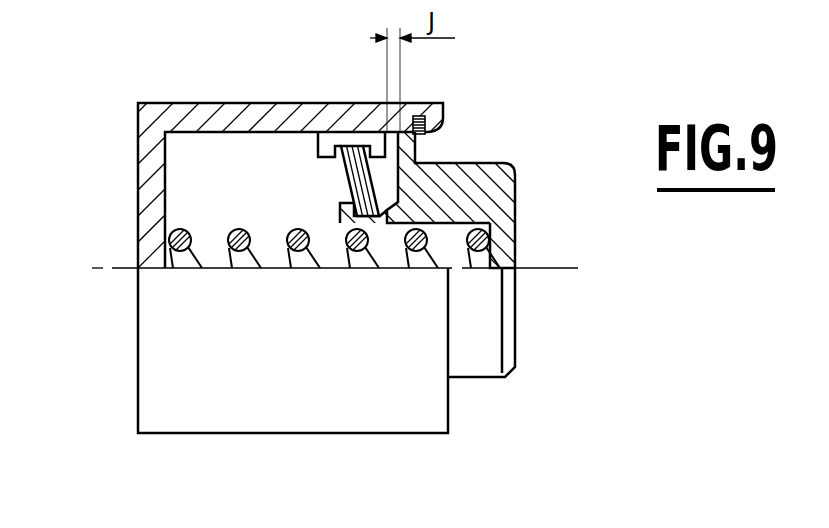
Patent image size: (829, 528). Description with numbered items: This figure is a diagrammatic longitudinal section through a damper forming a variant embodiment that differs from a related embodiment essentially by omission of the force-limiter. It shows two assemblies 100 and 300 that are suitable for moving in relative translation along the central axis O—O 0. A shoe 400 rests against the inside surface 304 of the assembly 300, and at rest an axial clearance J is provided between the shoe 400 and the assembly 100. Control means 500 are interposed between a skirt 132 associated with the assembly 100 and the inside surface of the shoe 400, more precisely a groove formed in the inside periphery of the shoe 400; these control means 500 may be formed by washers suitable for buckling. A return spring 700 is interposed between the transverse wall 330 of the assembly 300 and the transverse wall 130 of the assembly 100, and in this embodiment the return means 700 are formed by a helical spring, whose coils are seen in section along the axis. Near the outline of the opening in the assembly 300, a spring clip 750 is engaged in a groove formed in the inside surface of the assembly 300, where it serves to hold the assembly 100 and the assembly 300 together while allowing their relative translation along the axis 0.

The central axis O—O 0 is at (117, 268).
The assembly 100 is at (422, 200).
The transverse wall 130 is at (493, 258).
The skirt 132 is at (342, 207).
The assembly 300 is at (318, 117).
The inside surface 304 is at (219, 135).
The transverse wall 330 is at (140, 218).
The shoe 400 is at (316, 143).
The control means 500 is at (349, 175).
The return spring 700 is at (232, 252).
The spring clip 750 is at (428, 140).